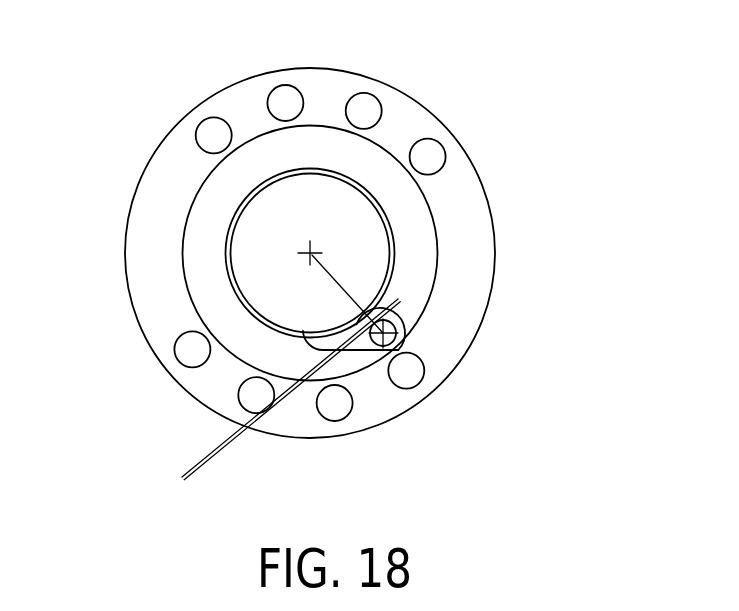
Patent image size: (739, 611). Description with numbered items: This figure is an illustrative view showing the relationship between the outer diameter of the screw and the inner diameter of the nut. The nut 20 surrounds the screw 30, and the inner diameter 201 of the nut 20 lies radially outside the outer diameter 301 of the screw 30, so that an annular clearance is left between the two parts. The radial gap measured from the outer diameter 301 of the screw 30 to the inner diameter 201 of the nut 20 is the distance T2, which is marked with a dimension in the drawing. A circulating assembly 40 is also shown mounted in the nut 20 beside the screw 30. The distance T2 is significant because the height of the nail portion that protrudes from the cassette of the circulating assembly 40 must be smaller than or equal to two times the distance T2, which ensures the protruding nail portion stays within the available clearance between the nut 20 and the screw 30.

The nut 20 is at (415, 285).
The inner diameter of the nut 201 is at (360, 182).
The screw 30 is at (247, 245).
The outer diameter of the screw 301 is at (383, 220).
The circulating assembly 40 is at (357, 343).
The distance from the outer diameter of the screw to the inner diameter of the nut T2 is at (168, 460).